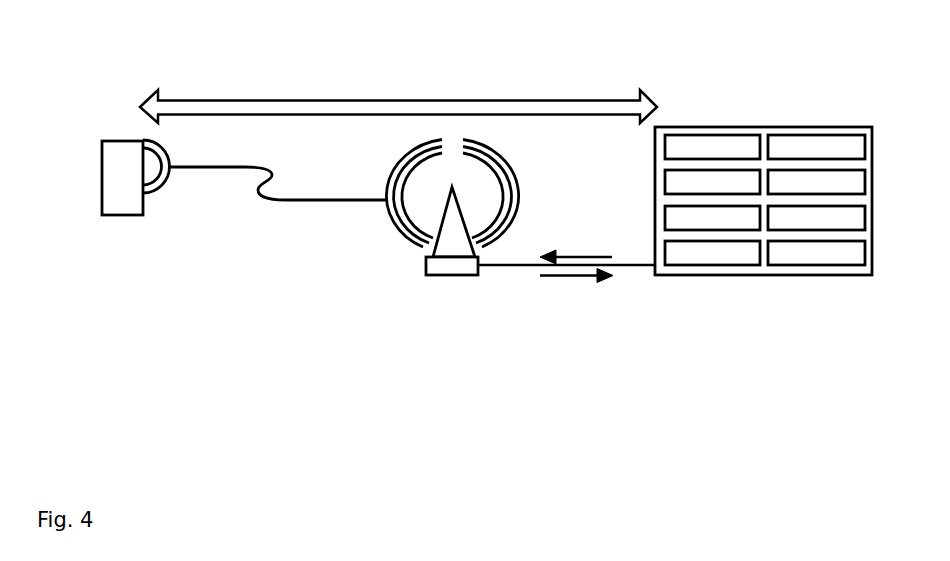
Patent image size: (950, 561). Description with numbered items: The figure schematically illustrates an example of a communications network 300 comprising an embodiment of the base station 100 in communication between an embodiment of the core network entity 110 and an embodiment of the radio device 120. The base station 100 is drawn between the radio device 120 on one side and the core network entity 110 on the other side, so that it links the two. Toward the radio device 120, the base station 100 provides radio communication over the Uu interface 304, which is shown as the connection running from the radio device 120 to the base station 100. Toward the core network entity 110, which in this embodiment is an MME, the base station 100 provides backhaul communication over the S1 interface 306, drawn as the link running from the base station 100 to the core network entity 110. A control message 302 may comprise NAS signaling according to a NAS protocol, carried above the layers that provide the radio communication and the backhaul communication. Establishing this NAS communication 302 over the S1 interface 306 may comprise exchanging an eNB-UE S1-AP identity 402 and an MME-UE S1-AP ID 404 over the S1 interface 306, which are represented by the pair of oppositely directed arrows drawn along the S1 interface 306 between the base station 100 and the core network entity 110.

The communications network 300 is at (77, 34).
The control message 302 is at (420, 100).
The Uu interface 304 is at (282, 200).
The S1 interface 306 is at (517, 265).
The eNB-UE S1-AP identity 402 is at (570, 265).
The MME-UE S1-AP ID 404 is at (570, 265).
The base station 100 is at (452, 277).
The core network entity 110 is at (805, 275).
The radio device 120 is at (122, 215).